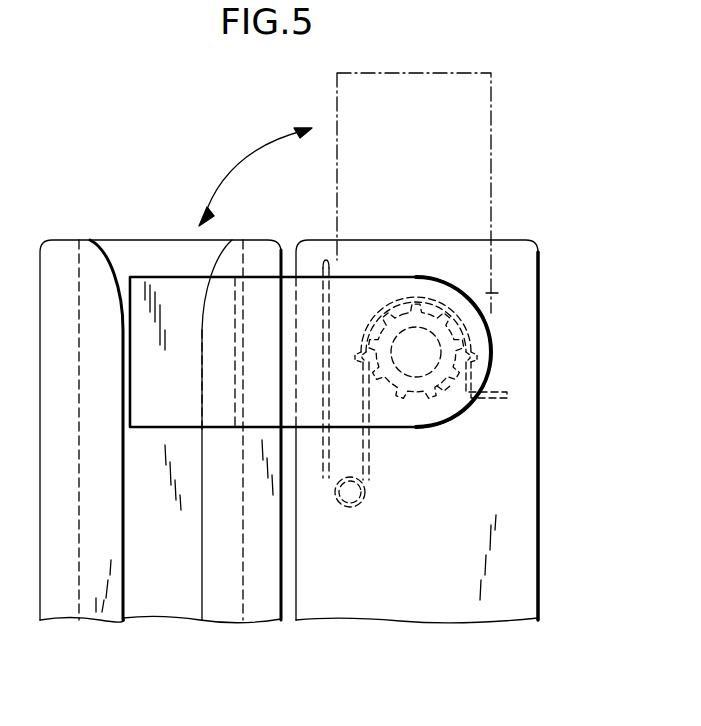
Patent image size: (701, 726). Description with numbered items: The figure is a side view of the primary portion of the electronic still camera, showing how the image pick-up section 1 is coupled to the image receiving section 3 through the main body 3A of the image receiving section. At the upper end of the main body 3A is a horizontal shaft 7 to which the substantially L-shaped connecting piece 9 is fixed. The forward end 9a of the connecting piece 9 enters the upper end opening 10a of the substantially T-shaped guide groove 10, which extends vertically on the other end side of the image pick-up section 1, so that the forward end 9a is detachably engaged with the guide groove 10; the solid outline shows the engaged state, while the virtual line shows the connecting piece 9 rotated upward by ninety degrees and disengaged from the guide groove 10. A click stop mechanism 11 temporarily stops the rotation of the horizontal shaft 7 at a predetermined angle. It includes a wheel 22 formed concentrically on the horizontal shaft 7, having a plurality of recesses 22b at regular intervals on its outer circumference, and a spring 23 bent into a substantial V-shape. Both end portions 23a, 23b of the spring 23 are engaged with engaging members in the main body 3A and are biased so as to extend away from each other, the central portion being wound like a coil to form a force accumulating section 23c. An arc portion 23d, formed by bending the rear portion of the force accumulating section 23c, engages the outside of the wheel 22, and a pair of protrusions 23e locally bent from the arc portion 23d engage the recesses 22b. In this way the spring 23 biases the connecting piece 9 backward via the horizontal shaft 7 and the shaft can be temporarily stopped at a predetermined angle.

The image pick-up section 1 is at (62, 606).
The guide groove 10 is at (158, 605).
The upper end opening 10a is at (126, 240).
The connecting piece 9 is at (447, 292).
The forward end 9a is at (217, 412).
The click stop mechanism 11 is at (425, 432).
The image receiving section 3 is at (400, 620).
The main body of the image receiving section 3A is at (517, 605).
The horizontal shaft 7 is at (416, 335).
The wheel 22 is at (396, 402).
The recesses 22b is at (452, 390).
The spring 23 is at (341, 506).
The end portion of the spring 23a is at (320, 258).
The end portion of the spring 23b is at (507, 394).
The force accumulating section 23c is at (363, 502).
The arc portion 23d is at (455, 299).
The protrusions 23e is at (360, 353).